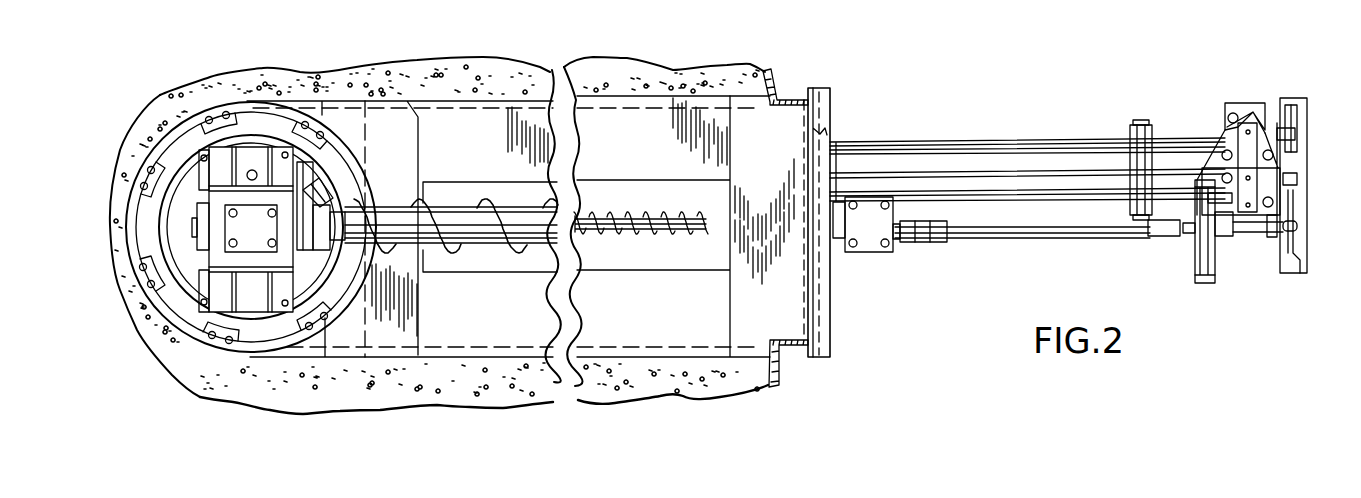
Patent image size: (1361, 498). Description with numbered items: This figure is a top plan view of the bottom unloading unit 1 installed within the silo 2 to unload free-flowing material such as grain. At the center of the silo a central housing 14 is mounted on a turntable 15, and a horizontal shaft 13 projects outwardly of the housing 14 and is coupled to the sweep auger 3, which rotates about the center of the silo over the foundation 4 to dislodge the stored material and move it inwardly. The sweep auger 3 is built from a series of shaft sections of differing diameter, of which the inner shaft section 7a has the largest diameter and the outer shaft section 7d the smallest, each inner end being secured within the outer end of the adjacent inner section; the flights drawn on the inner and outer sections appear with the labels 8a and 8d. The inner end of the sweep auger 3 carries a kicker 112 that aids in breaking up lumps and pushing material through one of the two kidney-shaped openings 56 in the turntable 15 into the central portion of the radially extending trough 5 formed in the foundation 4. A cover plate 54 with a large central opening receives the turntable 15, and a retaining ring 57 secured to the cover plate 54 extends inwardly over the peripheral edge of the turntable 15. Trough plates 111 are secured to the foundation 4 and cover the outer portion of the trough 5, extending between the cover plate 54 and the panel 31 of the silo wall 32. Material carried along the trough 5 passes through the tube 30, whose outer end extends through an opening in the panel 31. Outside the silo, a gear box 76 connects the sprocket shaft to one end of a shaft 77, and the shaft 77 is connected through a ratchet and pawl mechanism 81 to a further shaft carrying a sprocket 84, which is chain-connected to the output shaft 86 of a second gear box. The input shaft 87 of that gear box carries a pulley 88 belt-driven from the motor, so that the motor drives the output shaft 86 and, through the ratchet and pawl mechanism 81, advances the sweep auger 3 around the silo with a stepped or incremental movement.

The bottom unloading unit 1 is at (1055, 145).
The silo 2 is at (769, 82).
The sweep auger 3 is at (475, 202).
The foundation 4 is at (627, 66).
The trough 5 is at (675, 95).
The inner shaft section 7a is at (497, 248).
The auger tube 8a is at (530, 252).
The outer shaft section 7d is at (657, 217).
The small auger shaft 8d is at (678, 217).
The horizontal shaft 13 is at (357, 212).
The central housing 14 is at (217, 203).
The turntable 15 is at (257, 133).
The tube 30 is at (923, 148).
The panel 31 is at (813, 358).
The silo wall 32 is at (772, 384).
The cover plate 54 is at (397, 113).
The kidney-shaped openings 56 is at (318, 277).
The retaining ring 57 is at (177, 148).
The gear box 76 is at (876, 252).
The shaft 77 is at (977, 230).
The ratchet and pawl mechanism 81 is at (1192, 257).
The sprocket 84 is at (1293, 238).
The output shaft 86 is at (1297, 178).
The input shaft 87 is at (1295, 135).
The pulley 88 is at (1291, 105).
The trough plates 111 is at (537, 115).
The kicker 112 is at (313, 187).